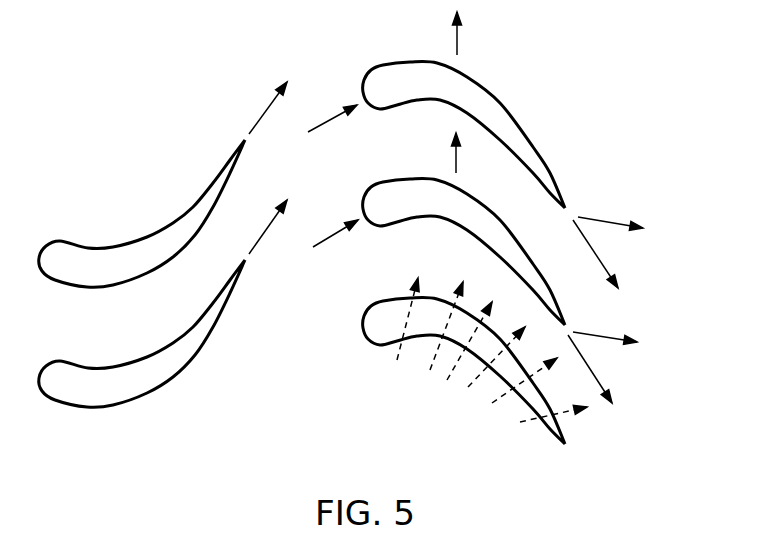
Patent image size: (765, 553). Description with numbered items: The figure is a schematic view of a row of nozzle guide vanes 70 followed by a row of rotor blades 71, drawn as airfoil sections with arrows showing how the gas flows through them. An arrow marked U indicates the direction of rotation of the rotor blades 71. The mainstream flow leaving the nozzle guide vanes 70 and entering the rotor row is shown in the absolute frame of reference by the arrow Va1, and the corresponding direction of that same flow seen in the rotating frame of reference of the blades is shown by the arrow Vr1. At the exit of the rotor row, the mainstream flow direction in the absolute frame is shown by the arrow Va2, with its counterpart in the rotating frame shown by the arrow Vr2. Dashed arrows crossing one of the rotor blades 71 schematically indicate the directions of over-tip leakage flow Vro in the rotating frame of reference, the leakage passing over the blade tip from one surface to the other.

The nozzle guide vanes 70 is at (127, 245).
The rotor blades 71 is at (515, 117).
The mainstream flow direction at rotor entrance in absolute frame Va1 is at (268, 103).
The mainstream flow direction at rotor entrance in rotating frame Vr1 is at (333, 113).
The direction of rotation of the rotor blades U is at (453, 42).
The mainstream flow direction at rotor exit in absolute frame Va2 is at (612, 220).
The mainstream flow direction at rotor exit in rotating frame Vr2 is at (600, 255).
The over-tip leakage flow directions Vro is at (430, 367).